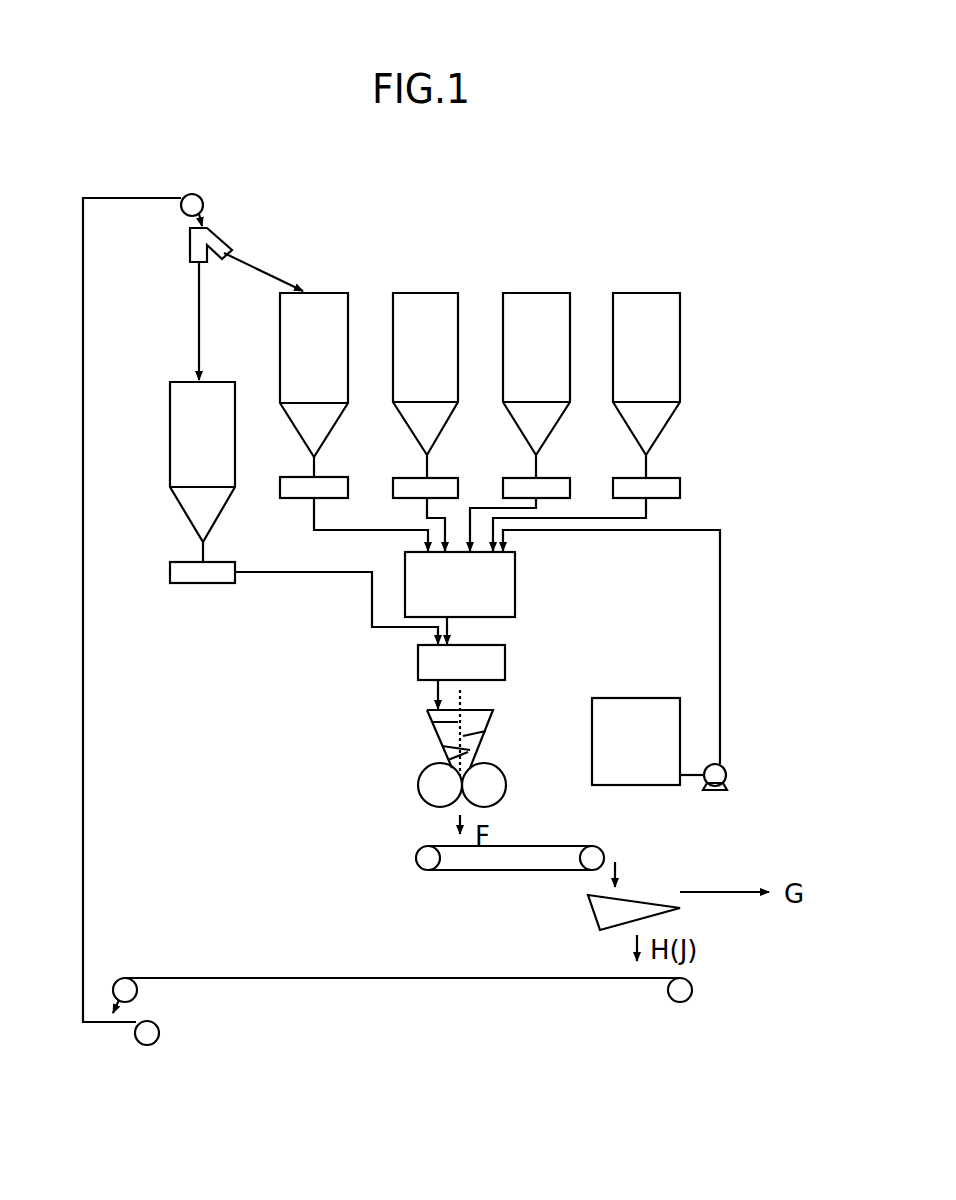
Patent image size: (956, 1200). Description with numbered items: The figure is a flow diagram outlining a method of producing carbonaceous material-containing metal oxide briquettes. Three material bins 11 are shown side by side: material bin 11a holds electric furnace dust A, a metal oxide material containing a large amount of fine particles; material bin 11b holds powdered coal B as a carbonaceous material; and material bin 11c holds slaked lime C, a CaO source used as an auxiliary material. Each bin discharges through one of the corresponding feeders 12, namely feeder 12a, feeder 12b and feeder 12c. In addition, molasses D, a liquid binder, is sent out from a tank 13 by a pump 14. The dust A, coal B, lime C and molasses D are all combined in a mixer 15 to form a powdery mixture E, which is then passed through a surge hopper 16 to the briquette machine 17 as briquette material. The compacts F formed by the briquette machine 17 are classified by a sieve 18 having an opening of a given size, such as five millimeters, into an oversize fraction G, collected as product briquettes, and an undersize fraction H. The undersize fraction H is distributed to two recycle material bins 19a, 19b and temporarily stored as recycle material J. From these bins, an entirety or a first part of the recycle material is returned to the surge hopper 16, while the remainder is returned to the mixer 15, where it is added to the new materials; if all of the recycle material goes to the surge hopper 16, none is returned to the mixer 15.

The material bins 11 is at (672, 223).
The material bin 11a is at (428, 293).
The material bin 11b is at (534, 293).
The material bin 11c is at (646, 293).
The feeders 12 is at (758, 430).
The feeder 12a is at (437, 477).
The feeder 12b is at (548, 477).
The feeder 12c is at (660, 476).
The tank 13 is at (640, 698).
The pump 14 is at (735, 779).
The mixer 15 is at (520, 594).
The surge hopper 16 is at (508, 672).
The briquette machine 17 is at (426, 750).
The sieve 18 is at (588, 917).
The recycle material bin 19a is at (168, 420).
The recycle material bin 19b is at (280, 313).